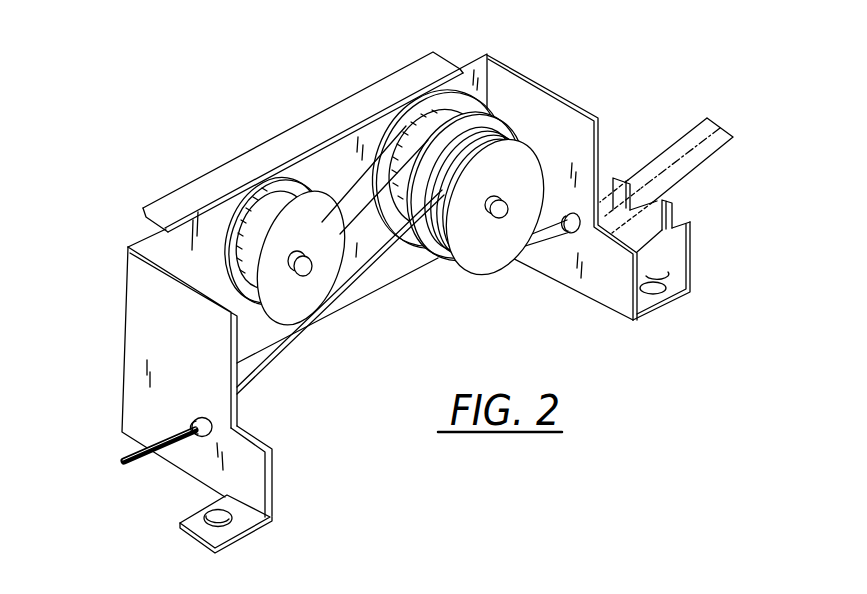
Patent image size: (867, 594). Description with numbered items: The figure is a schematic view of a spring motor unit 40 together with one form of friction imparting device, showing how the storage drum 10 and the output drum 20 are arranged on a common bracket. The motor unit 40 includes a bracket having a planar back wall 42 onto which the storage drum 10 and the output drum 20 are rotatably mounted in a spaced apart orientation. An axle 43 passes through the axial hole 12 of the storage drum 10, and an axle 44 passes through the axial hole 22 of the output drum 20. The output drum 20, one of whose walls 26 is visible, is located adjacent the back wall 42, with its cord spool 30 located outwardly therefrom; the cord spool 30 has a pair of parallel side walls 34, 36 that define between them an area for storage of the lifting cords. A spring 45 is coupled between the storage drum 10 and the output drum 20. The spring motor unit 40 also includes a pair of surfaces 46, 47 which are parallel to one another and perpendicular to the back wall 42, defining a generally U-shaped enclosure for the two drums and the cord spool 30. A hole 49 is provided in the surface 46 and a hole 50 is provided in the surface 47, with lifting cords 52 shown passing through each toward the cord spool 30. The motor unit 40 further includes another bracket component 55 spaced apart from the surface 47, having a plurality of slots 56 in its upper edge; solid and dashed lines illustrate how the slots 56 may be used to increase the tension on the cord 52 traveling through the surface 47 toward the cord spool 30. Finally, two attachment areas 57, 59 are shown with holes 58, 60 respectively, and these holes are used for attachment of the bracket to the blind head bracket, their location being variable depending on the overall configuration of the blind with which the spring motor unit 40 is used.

The storage drum 10 is at (246, 199).
The axial hole 12 is at (296, 250).
The output drum 20 is at (453, 142).
The axial hole 22 is at (495, 209).
The wall 26 is at (603, 135).
The cord spool 30 is at (519, 167).
The side wall 34 is at (422, 100).
The side wall 36 is at (490, 108).
The spring motor unit 40 is at (257, 136).
The planar back wall 42 is at (380, 283).
The axle 43 is at (307, 272).
The axle 44 is at (504, 217).
The spring 45 is at (350, 181).
The surface 46 is at (150, 357).
The surface 47 is at (526, 97).
The hole 49 is at (194, 433).
The hole 50 is at (565, 233).
The lifting cords 52 is at (693, 122).
The bracket component 55 is at (691, 249).
The slots 56 is at (680, 204).
The attachment area 57 is at (251, 512).
The hole 58 is at (215, 510).
The attachment area 59 is at (666, 287).
The hole 60 is at (648, 274).